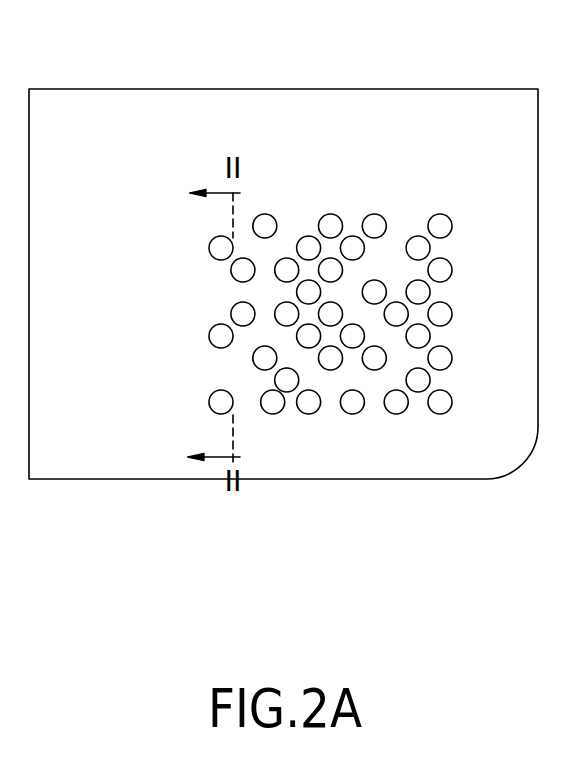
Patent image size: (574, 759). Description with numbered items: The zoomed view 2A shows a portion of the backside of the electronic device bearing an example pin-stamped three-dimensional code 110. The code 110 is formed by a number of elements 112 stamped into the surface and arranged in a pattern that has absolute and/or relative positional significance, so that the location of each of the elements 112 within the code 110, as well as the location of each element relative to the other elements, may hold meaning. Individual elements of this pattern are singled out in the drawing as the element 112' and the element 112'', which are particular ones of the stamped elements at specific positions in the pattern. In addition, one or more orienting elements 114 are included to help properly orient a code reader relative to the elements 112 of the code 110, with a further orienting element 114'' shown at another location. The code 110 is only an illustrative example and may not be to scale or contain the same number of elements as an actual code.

The plate / sheet with hole pattern 2A is at (439, 89).
The code 110 is at (346, 157).
The elements 112 is at (331, 430).
The hole (first opening, variant) 112' is at (183, 348).
The hole (first opening, variant) 112'' is at (190, 270).
The orienting elements 114 is at (470, 287).
The hole (second opening, variant) 114'' is at (183, 416).